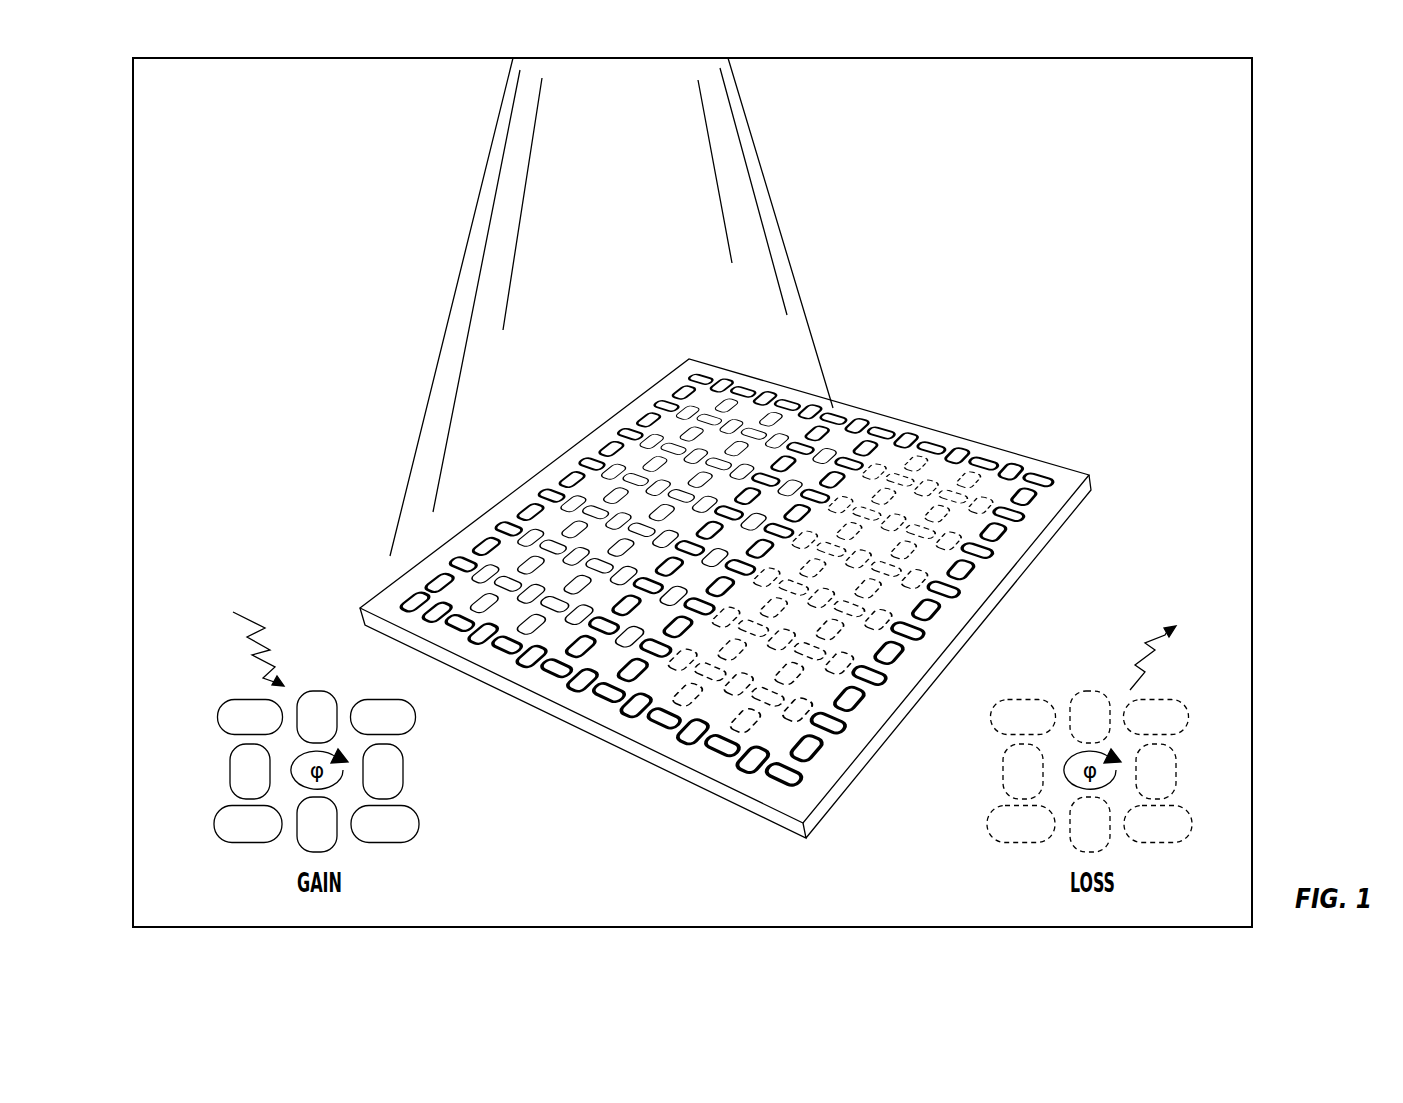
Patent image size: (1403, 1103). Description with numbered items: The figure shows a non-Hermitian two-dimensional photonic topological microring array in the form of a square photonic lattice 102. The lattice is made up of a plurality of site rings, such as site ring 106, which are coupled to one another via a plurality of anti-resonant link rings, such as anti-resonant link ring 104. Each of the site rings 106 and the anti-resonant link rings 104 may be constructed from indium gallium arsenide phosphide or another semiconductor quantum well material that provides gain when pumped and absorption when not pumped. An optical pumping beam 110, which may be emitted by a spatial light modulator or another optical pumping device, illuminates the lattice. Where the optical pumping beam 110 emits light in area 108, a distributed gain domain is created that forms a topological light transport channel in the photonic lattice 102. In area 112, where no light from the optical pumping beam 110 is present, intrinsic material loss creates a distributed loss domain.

The square photonic lattice 102 is at (615, 413).
The anti-resonant link ring 104 is at (750, 387).
The site ring 106 is at (1010, 478).
The area 108 is at (637, 505).
The optical pumping beam 110 is at (583, 75).
The area 112 is at (885, 541).